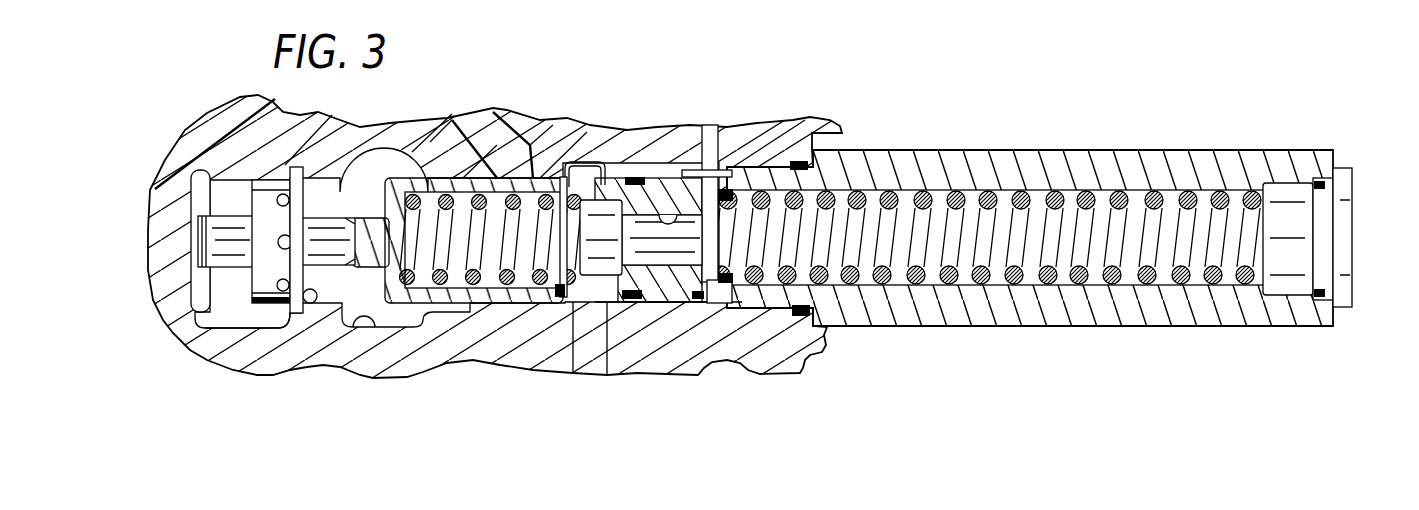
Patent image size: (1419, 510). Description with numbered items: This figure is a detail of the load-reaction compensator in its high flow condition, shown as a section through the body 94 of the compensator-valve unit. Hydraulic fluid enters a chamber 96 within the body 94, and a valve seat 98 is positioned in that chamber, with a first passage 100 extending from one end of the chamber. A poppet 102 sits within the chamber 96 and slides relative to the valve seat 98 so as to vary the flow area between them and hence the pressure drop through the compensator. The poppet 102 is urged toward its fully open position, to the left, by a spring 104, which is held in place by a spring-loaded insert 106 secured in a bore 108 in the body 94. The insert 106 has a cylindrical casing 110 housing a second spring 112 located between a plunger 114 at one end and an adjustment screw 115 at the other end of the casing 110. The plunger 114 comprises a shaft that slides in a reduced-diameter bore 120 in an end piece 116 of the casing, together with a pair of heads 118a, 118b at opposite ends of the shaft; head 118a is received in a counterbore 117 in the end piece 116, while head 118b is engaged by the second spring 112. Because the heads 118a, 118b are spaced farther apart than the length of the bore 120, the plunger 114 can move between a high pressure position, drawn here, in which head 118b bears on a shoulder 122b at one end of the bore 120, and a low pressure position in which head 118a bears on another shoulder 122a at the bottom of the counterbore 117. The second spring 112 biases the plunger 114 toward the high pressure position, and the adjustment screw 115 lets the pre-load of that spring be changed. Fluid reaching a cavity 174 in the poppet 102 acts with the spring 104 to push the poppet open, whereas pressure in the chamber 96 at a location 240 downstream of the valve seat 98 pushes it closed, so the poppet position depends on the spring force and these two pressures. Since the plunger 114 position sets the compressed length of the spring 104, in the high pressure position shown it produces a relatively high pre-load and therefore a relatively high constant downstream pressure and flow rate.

The body 94 is at (838, 345).
The chamber 96 is at (372, 297).
The valve seat 98 is at (311, 303).
The first passage 100 is at (260, 124).
The poppet 102 is at (216, 318).
The spring 104 is at (457, 297).
The spring-loaded insert 106 is at (892, 327).
The bore 108 is at (783, 320).
The cylindrical casing 110 is at (1000, 327).
The second spring 112 is at (1120, 275).
The plunger 114 is at (614, 305).
The adjustment screw 115 is at (1353, 243).
The end piece 116 is at (648, 302).
The counterbore 117 is at (582, 297).
The head 118a is at (553, 310).
The head 118b is at (692, 297).
The bore 120 is at (667, 212).
The shoulder 122a is at (620, 197).
The shoulder 122b is at (720, 193).
The cavity 174 is at (422, 300).
The location 240 is at (238, 318).